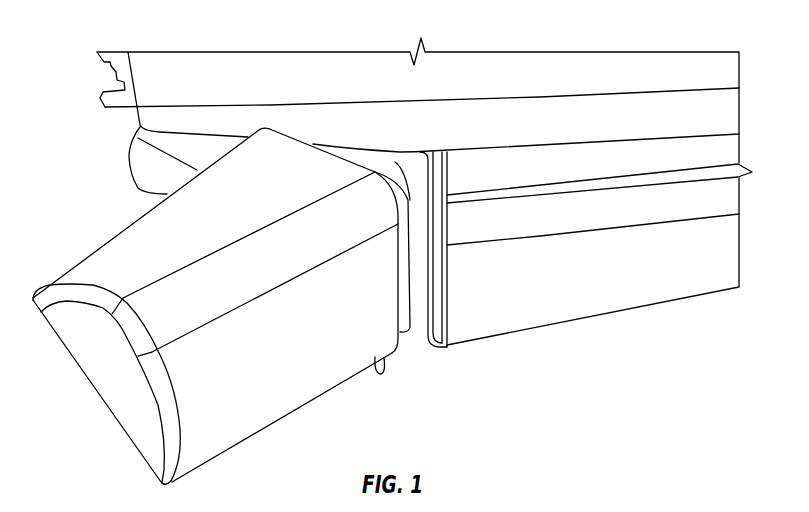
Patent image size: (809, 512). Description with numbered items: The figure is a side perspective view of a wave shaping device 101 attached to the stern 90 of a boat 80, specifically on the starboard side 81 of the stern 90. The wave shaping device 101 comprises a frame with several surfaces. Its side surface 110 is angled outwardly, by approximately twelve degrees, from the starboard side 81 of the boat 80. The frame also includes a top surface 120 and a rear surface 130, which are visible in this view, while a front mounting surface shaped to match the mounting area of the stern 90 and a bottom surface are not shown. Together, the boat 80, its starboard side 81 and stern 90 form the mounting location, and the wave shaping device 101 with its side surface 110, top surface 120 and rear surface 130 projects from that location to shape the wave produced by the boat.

The boat 80 is at (632, 66).
The starboard side 81 is at (703, 155).
The stern 90 is at (190, 77).
The wave shaping device 101 is at (268, 353).
The side surface 110 is at (342, 353).
The top surface 120 is at (172, 230).
The rear surface 130 is at (95, 368).